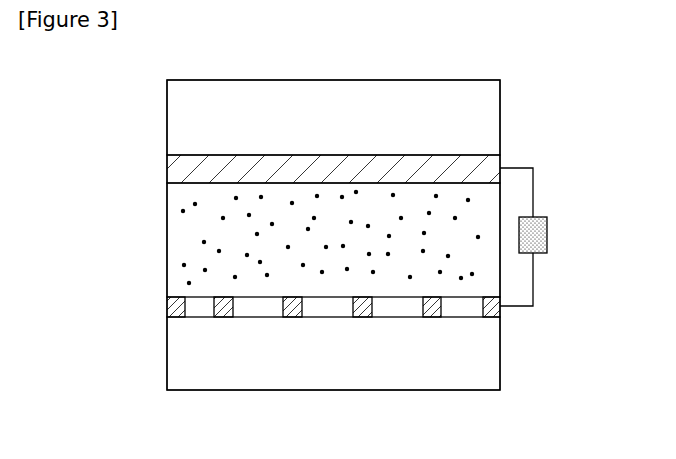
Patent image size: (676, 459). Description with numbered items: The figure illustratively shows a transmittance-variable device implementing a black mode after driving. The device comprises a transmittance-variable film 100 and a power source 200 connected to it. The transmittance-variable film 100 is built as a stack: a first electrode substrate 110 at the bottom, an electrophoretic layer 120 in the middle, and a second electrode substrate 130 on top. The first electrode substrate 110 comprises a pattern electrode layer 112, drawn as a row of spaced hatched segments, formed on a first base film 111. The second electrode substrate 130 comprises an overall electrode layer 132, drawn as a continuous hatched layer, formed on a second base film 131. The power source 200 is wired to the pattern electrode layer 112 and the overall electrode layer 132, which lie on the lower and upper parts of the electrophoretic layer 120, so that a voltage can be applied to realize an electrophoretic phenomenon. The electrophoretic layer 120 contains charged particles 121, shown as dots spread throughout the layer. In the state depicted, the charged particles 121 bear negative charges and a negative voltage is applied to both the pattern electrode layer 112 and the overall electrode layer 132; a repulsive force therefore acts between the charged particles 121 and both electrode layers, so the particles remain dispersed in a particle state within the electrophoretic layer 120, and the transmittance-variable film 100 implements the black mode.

The transmittance-variable film 100 is at (70, 137).
The first electrode substrate 110 is at (288, 343).
The first base film 111 is at (115, 298).
The pattern electrode layer 112 is at (177, 305).
The electrophoretic layer 120 is at (308, 240).
The charged particles 121 is at (181, 211).
The second electrode substrate 130 is at (287, 132).
The second base film 131 is at (175, 117).
The overall electrode layer 132 is at (307, 170).
The power source 200 is at (547, 239).